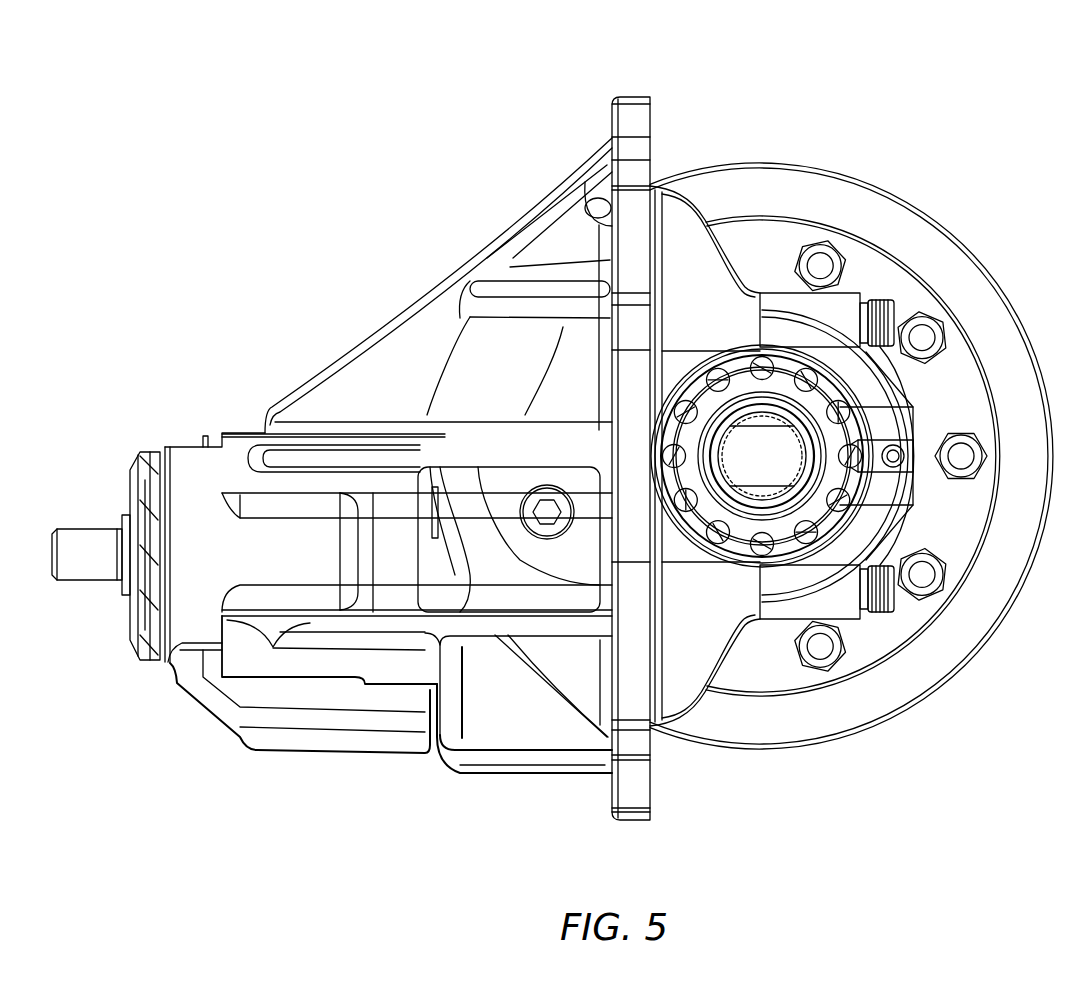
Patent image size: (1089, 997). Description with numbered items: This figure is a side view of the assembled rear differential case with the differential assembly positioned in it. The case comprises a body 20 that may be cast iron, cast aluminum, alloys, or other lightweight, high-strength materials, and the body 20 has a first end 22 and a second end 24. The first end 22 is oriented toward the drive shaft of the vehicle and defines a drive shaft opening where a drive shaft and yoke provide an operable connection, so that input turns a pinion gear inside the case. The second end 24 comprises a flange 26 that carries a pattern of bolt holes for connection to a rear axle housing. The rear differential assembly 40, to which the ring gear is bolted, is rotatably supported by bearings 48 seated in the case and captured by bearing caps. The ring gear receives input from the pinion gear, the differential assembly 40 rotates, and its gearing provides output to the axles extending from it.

The body 20 is at (257, 370).
The first end 22 is at (134, 440).
The second end 24 is at (690, 115).
The flange 26 is at (636, 80).
The rear differential assembly 40 is at (902, 688).
The bearings 48 is at (775, 565).